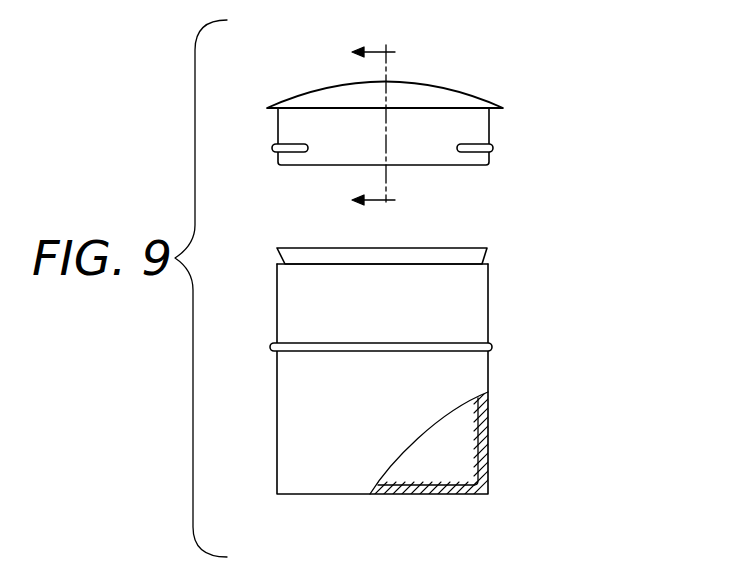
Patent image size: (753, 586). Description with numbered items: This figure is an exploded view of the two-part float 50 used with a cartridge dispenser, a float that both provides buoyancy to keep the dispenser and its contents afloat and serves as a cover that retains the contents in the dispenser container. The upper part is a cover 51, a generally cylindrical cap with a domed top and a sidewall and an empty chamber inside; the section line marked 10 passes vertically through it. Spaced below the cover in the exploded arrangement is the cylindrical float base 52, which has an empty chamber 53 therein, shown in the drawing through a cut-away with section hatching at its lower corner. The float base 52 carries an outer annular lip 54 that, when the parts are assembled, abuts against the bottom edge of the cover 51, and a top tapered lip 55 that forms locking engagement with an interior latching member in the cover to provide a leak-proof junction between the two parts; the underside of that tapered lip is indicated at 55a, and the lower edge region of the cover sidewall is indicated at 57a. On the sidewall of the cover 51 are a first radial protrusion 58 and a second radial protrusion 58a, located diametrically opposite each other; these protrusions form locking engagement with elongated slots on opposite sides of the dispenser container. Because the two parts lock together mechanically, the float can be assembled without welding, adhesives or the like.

The float 50 is at (178, 131).
The section line 10- 10 is at (350, 125).
The cover 51 is at (441, 88).
The float base 52 is at (478, 374).
The empty chamber 53 is at (467, 462).
The outer annular lip 54 is at (482, 343).
The top tapered lip 55 is at (487, 250).
The flange underside 55a is at (485, 259).
The skirt bottom edge 57a is at (463, 165).
The first radial protrusion 58 is at (496, 147).
The second radial protrusion 58a is at (272, 149).